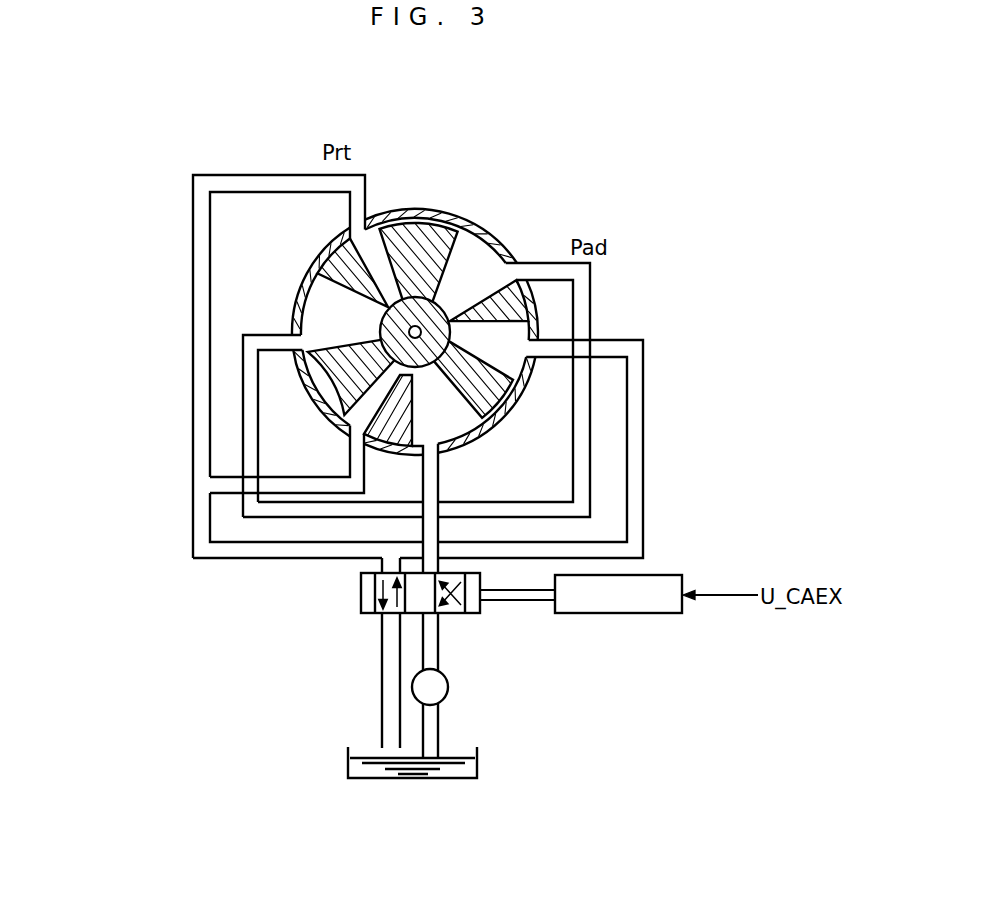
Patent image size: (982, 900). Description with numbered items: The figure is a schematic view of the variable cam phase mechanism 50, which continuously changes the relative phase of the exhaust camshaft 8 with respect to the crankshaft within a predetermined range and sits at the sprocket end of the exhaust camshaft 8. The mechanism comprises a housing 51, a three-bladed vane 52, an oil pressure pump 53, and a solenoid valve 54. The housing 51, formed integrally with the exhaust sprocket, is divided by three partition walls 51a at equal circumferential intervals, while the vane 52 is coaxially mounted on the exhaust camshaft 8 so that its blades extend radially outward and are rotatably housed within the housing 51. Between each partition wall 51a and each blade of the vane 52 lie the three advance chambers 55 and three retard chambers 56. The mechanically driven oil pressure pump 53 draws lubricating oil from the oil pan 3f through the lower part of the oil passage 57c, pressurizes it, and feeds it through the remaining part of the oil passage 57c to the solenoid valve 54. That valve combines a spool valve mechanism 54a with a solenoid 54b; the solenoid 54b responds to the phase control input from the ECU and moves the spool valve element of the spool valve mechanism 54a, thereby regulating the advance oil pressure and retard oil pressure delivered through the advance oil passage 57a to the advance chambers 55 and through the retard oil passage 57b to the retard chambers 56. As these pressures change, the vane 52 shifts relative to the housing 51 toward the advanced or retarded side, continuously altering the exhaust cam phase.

The variable cam phase mechanism 50 is at (474, 105).
The housing 51 is at (460, 218).
The partition walls 51a is at (494, 288).
The three-bladed vane 52 is at (415, 229).
The oil pressure pump 53 is at (450, 685).
The solenoid valve 54 is at (492, 628).
The spool valve mechanism 54a is at (362, 592).
The solenoid 54b is at (617, 615).
The advance chambers 55 is at (465, 248).
The retard chambers 56 is at (371, 244).
The advance oil passage 57a is at (590, 312).
The retard oil passage 57b is at (643, 392).
The oil passage 57c is at (440, 642).
The exhaust camshaft 8 is at (447, 311).
The oil pan 3f is at (413, 780).